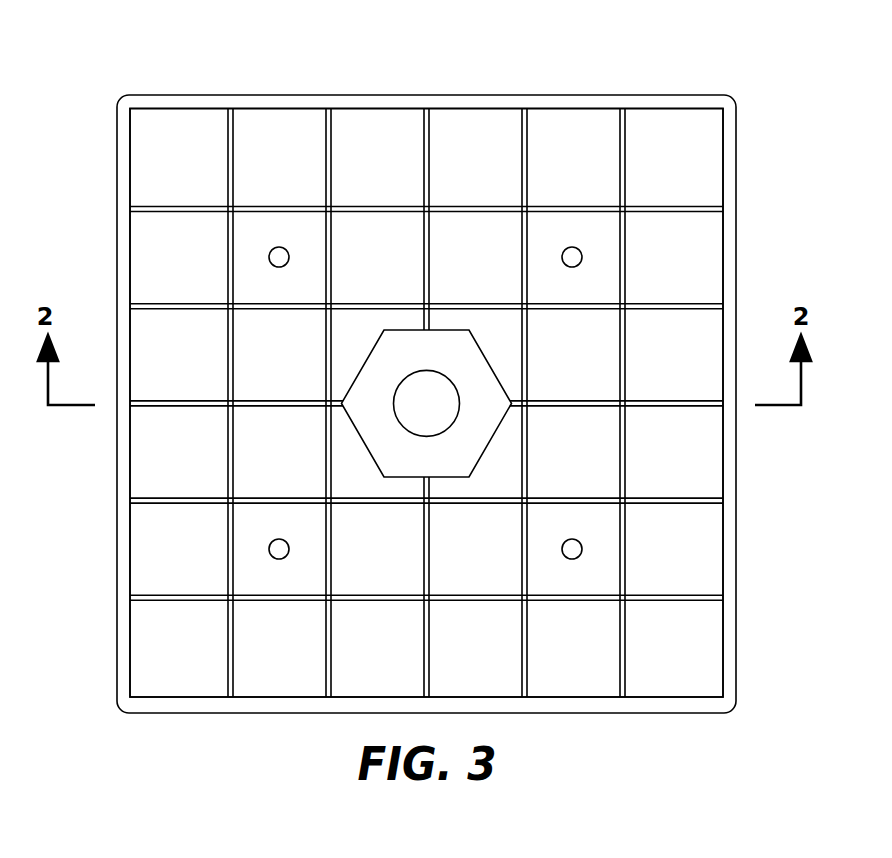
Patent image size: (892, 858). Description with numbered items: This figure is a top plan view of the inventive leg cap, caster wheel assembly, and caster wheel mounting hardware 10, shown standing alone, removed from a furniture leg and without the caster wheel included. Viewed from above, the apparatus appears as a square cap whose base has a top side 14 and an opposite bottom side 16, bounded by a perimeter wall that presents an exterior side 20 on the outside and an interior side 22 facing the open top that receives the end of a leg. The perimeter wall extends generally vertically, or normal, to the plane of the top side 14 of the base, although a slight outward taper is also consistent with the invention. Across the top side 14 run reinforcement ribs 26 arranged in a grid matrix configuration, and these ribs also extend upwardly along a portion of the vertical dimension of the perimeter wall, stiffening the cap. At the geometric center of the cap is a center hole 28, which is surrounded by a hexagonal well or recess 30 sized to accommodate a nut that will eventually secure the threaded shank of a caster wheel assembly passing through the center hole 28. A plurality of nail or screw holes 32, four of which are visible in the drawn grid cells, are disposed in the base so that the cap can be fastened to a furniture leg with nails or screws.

The leg cap, caster wheel assembly, and caster wheel mounting hardware 10 is at (752, 74).
The top side 14 is at (707, 265).
The bottom side 16 is at (288, 123).
The exterior side 20 is at (750, 530).
The interior side 22 is at (706, 637).
The reinforcement ribs 26 is at (422, 670).
The center hole 28 is at (435, 392).
The well or recess 30 is at (385, 353).
The nail or screw holes 32 is at (282, 247).